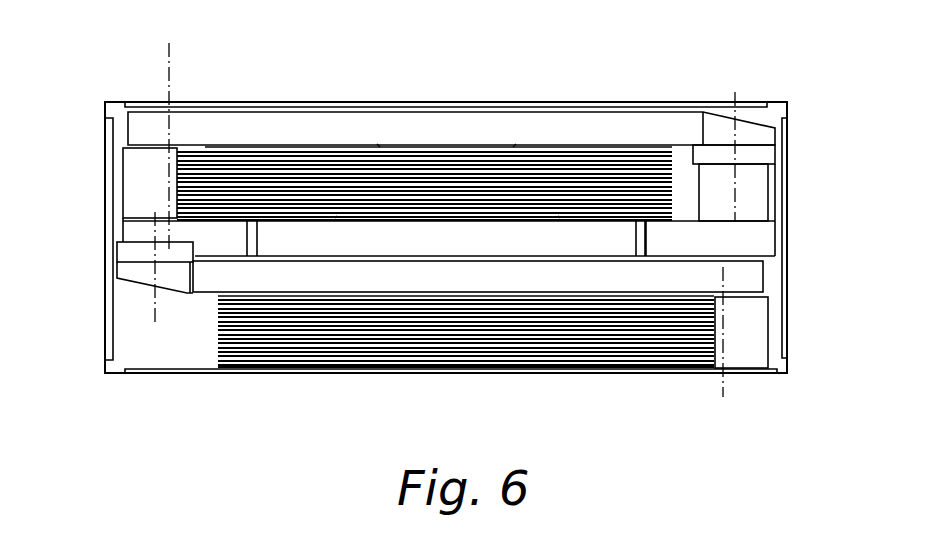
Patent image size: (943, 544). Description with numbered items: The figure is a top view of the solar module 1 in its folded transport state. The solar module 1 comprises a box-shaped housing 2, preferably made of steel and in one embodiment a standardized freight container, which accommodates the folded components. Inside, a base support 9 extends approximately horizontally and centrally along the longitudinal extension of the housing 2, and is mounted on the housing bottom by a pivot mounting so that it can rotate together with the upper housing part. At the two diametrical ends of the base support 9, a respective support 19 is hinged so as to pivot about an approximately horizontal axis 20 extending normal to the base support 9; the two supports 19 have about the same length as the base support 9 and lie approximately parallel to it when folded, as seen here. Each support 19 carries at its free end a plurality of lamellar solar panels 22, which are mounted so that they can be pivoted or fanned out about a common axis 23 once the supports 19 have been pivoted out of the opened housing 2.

The solar module 1 is at (78, 270).
The housing 2 is at (108, 183).
The base support 9 is at (488, 252).
The support 19 is at (613, 135).
The horizontal axis 20 is at (737, 130).
The lamellar solar panels 22 is at (273, 178).
The common axis 23 is at (167, 72).